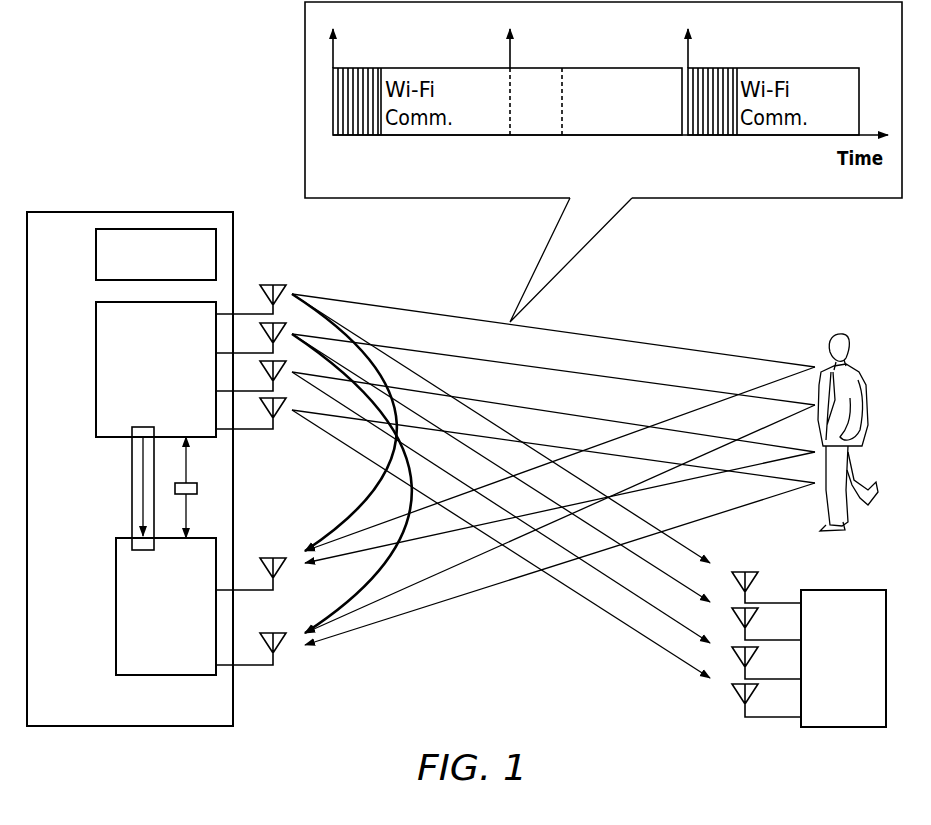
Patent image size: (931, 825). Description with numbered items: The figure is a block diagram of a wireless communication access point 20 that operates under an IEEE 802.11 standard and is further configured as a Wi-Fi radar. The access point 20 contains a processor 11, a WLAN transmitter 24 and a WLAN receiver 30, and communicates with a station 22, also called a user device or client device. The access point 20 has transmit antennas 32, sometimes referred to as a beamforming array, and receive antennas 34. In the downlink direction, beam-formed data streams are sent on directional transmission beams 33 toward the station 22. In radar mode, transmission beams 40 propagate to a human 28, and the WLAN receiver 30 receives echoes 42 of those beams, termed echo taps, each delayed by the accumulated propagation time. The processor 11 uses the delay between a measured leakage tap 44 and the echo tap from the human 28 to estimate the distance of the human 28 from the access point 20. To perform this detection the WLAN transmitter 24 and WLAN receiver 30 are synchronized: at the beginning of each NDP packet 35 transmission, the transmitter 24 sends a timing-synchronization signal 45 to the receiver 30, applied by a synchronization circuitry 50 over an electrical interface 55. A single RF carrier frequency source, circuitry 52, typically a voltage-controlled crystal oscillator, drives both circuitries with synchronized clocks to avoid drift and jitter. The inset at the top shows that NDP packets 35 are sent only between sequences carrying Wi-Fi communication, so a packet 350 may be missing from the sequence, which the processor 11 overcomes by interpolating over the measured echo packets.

The access point 20 is at (67, 212).
The processor 11 is at (152, 229).
The WLAN transmitter 24 is at (156, 369).
The WLAN receiver 30 is at (166, 606).
The station 22 is at (809, 649).
The human 28 is at (833, 334).
The transmit antennas 32 is at (312, 289).
The receive antennas 34 is at (296, 676).
The directional transmission beams 33 is at (618, 651).
The transmission beams 40 is at (645, 328).
The echoes 42 is at (741, 513).
The leakage tap 44 is at (359, 486).
The timing-synchronization signal 45 is at (342, 29).
The synchronization circuitry 50 is at (121, 507).
The circuitry 52 is at (197, 488).
The electrical interface 55 is at (132, 467).
The NDP packet 35 is at (373, 145).
The missing packet 350 is at (539, 128).